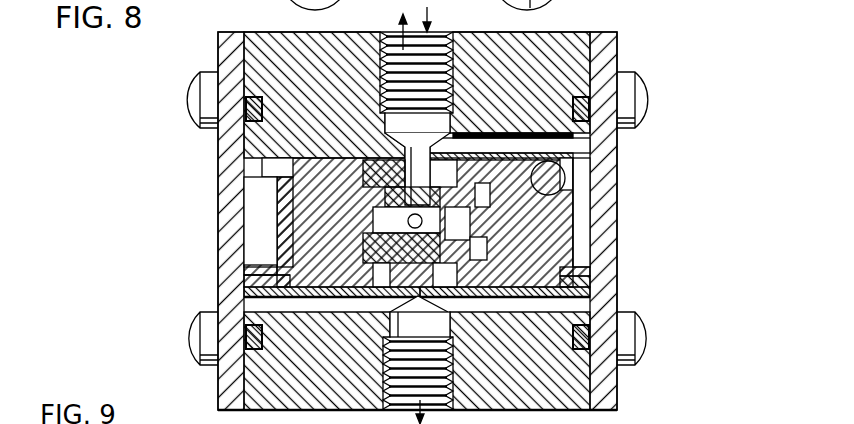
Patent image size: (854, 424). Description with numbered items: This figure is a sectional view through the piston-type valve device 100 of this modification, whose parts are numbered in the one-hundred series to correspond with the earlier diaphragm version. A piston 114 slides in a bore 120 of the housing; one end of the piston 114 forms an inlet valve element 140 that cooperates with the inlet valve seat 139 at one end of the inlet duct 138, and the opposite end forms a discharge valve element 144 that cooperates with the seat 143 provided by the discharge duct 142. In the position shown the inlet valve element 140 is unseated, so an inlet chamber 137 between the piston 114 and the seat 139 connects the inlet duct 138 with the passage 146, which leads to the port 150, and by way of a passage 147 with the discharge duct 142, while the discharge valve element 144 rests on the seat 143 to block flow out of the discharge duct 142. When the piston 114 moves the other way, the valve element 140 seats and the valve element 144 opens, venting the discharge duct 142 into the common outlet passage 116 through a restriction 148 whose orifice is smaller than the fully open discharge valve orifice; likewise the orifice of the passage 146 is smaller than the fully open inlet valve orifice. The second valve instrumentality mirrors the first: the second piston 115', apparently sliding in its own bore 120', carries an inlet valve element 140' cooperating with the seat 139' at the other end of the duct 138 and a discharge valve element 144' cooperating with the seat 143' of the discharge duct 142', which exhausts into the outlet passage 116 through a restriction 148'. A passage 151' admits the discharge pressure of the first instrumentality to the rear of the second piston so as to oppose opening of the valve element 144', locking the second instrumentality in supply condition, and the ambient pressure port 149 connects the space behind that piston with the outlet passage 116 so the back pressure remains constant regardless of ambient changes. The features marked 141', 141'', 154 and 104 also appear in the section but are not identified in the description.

The isolator/mount assembly 100 is at (640, 54).
The outlet passage 116 is at (588, 304).
The housing end block 141'' is at (417, 228).
The bore 120 is at (473, 222).
The lower body piece 120' is at (235, 281).
The passage 147 is at (580, 146).
The inlet valve seat 139 is at (501, 201).
The passage 146 is at (447, 185).
The stem pin 154 is at (402, 150).
The inlet valve element 140' is at (376, 250).
The inlet chamber 137 is at (458, 223).
The valve seat 139' is at (300, 248).
The inlet duct 138 is at (446, 275).
The inlet valve element 140 is at (483, 275).
The valve seat 143 is at (571, 101).
The discharge valve element 144 is at (617, 212).
The discharge duct 142 is at (613, 265).
The restriction 148 is at (617, 286).
The notch 141' is at (235, 166).
The valve seat 143' is at (235, 222).
The discharge valve element 144' is at (225, 222).
The discharge duct 142' is at (222, 263).
The restriction 148' is at (230, 289).
The base plate 115' is at (332, 293).
The piston 114 is at (530, 298).
The conical seat 151' is at (401, 305).
The ambient pressure port 149 is at (420, 324).
The port 150 is at (440, 18).
The outlet arrow 104 is at (455, 418).